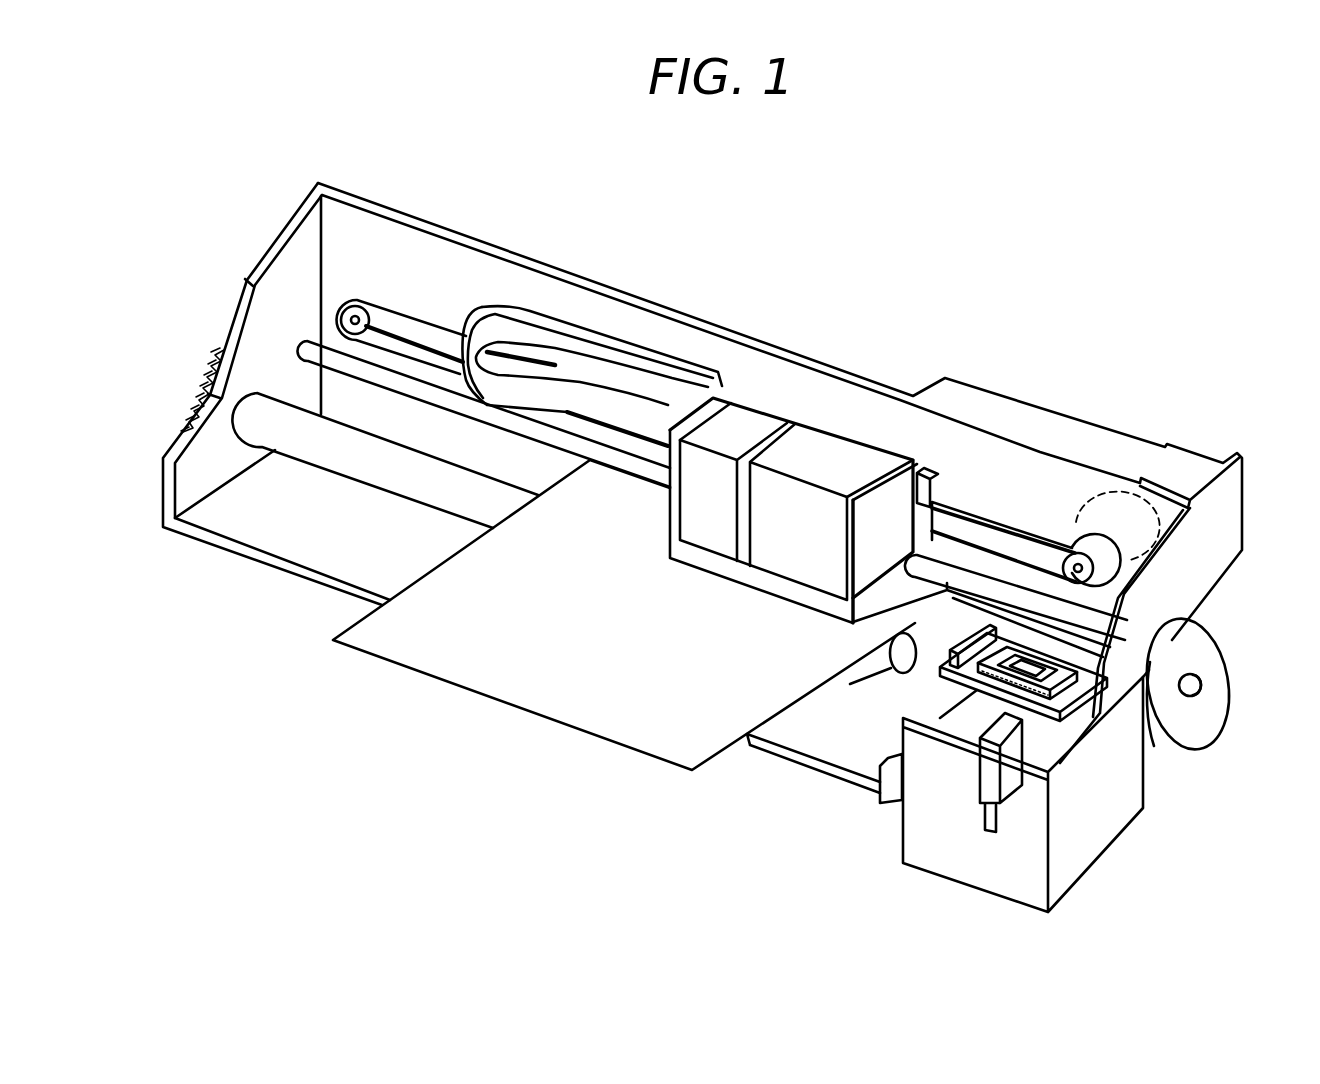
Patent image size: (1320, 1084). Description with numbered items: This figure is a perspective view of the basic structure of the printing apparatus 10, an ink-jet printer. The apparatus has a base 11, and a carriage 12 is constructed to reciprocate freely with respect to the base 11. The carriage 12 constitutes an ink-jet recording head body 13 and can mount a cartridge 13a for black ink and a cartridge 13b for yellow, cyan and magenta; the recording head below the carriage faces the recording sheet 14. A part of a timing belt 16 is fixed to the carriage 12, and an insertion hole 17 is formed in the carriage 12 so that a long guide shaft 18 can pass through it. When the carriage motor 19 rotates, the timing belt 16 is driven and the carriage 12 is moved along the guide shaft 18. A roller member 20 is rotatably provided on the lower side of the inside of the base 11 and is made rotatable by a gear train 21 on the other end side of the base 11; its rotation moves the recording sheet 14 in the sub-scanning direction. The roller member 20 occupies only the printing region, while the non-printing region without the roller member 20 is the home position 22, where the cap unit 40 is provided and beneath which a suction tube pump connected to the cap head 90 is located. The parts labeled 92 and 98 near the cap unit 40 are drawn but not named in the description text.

The printing apparatus 10 is at (719, 289).
The base 11 is at (228, 525).
The carriage 12 is at (684, 564).
The ink-jet recording head body 13 is at (761, 601).
The cartridge for black ink 13a is at (768, 415).
The cartridge for yellow, cyan and magenta 13b is at (864, 445).
The recording sheet 14 is at (428, 658).
The timing belt 16 is at (418, 313).
The insertion hole 17 is at (933, 502).
The guide shaft 18 is at (307, 343).
The carriage motor 19 is at (1077, 520).
The roller member 20 is at (372, 477).
The gear train 21 is at (203, 367).
The home position 22 is at (943, 698).
The cap unit 40 is at (1031, 730).
The cap head 90 is at (1047, 712).
The cap 92 is at (1047, 663).
The wiper 98 is at (965, 653).